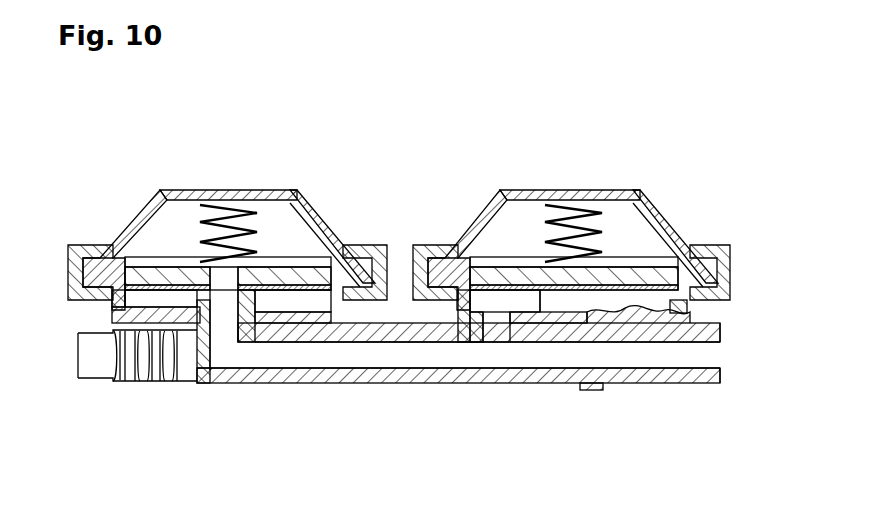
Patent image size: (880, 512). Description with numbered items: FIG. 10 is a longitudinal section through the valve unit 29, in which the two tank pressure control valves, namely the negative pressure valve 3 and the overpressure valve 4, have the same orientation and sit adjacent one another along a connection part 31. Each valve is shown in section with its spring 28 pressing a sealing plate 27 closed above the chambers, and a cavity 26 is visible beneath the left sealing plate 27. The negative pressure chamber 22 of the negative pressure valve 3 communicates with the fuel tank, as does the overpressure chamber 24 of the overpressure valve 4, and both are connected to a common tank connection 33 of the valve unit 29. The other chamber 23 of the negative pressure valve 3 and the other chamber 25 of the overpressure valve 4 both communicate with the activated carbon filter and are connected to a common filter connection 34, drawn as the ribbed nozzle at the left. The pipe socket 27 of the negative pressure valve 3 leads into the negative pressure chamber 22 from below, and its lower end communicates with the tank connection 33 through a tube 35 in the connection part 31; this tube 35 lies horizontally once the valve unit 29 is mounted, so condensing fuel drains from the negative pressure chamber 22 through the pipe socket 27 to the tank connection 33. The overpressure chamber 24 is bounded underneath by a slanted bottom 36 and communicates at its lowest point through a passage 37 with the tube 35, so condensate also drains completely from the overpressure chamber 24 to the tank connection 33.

The negative pressure valve 3 is at (224, 220).
The overpressure valve 4 is at (571, 221).
The negative pressure chamber 22 is at (160, 238).
The other chamber of the negative pressure valve 23 is at (293, 302).
The overpressure chamber 24 is at (518, 302).
The other chamber of the overpressure valve 25 is at (507, 227).
The cavity 26 is at (243, 268).
The pipe socket 27 is at (197, 300).
The spring 28 is at (215, 230).
The valve unit 29 is at (170, 156).
The connection part 31 is at (388, 393).
The tank connection 33 is at (707, 380).
The filter connection 34 is at (132, 353).
The tube 35 is at (333, 363).
The slanted bottom 36 is at (647, 293).
The passage 37 is at (495, 328).